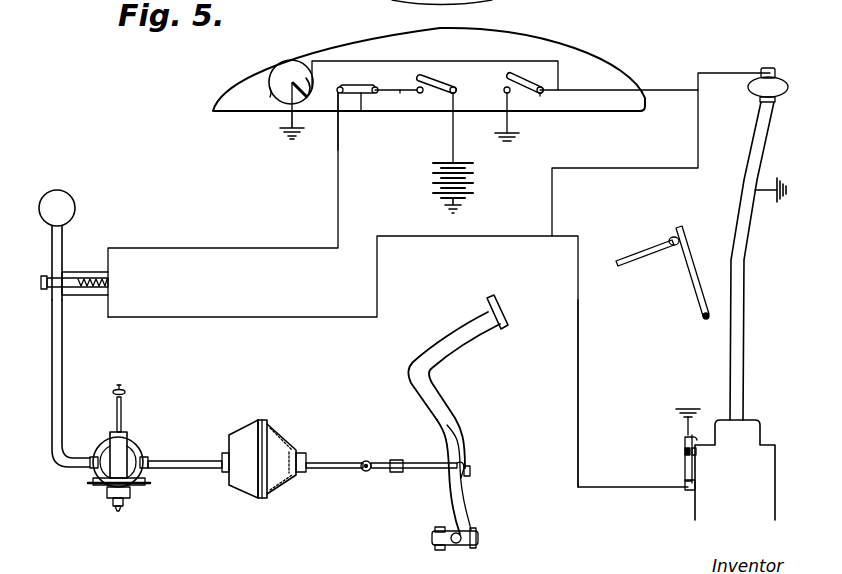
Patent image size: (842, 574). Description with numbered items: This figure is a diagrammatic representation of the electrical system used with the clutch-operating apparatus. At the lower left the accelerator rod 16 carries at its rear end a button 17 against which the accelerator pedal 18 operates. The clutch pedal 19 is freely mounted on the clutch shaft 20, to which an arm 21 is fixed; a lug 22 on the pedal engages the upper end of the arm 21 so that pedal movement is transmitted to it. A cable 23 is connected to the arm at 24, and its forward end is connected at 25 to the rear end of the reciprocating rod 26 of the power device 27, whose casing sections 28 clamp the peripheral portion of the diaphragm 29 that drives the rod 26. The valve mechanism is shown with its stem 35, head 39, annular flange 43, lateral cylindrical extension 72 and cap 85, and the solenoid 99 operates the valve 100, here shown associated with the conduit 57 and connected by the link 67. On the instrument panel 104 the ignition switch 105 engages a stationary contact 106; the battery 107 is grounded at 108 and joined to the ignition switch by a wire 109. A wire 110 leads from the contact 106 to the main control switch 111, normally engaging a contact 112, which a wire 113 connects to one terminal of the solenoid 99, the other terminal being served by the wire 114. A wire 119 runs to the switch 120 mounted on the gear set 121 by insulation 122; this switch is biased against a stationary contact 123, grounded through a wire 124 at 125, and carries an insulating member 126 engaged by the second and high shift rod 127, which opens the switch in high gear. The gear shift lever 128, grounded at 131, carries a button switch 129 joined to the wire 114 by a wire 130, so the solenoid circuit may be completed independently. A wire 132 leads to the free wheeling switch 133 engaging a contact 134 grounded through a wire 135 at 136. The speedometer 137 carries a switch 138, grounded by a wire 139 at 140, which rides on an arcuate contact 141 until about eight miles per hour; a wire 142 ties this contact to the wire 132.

The accelerator rod 16 is at (632, 255).
The button 17 is at (673, 237).
The accelerator pedal 18 is at (680, 225).
The clutch pedal 19 is at (457, 328).
The clutch shaft 20 is at (443, 550).
The arm 21 is at (458, 500).
The lug 22 is at (471, 470).
The cable 23 is at (425, 463).
The connection of cable to arm 24 is at (455, 470).
The connection of cable to rod 25 is at (366, 461).
The reciprocating rod 26 is at (337, 463).
The power device 27 is at (236, 432).
The casing sections 28 is at (292, 435).
The diaphragm 29 is at (301, 455).
The valve stem 35 is at (122, 392).
The head 39 is at (118, 387).
The annular flange 43 is at (136, 447).
The conduit 57 is at (62, 367).
The link rod 67 is at (180, 453).
The cylindrical extension 72 is at (112, 442).
The cap 85 is at (137, 497).
The solenoid 99 is at (84, 270).
The valve 100 is at (54, 283).
The instrument panel 104 is at (593, 62).
The ignition switch 105 is at (421, 94).
The stationary contact 106 is at (400, 105).
The vehicle battery 107 is at (470, 178).
The ground 108 is at (462, 209).
The wire 109 is at (455, 147).
The wire 110 is at (393, 88).
The main control switch 111 is at (370, 115).
The contact 112 is at (337, 95).
The wire 113 is at (337, 197).
The wire 114 is at (242, 316).
The wire 119 is at (578, 378).
The switch 120 is at (683, 467).
The gear set 121 is at (776, 482).
The insulation 122 is at (696, 484).
The stationary contact 123 is at (693, 437).
The wire 124 is at (683, 430).
The ground 125 is at (675, 407).
The insulating member 126 is at (685, 451).
The shift rod 127 is at (696, 449).
The gear shift lever 128 is at (748, 305).
The button switch 129 is at (770, 68).
The wire 130 is at (613, 167).
The ground 131 is at (780, 180).
The wire 132 is at (665, 85).
The free wheeling switch 133 is at (536, 100).
The stationary contact 134 is at (506, 87).
The wire 135 is at (517, 128).
The ground 136 is at (510, 142).
The speedometer 137 is at (270, 97).
The switch 138 is at (297, 62).
The wire 139 is at (282, 118).
The ground 140 is at (282, 140).
The arcuate contact 141 is at (340, 86).
The wire 142 is at (455, 55).